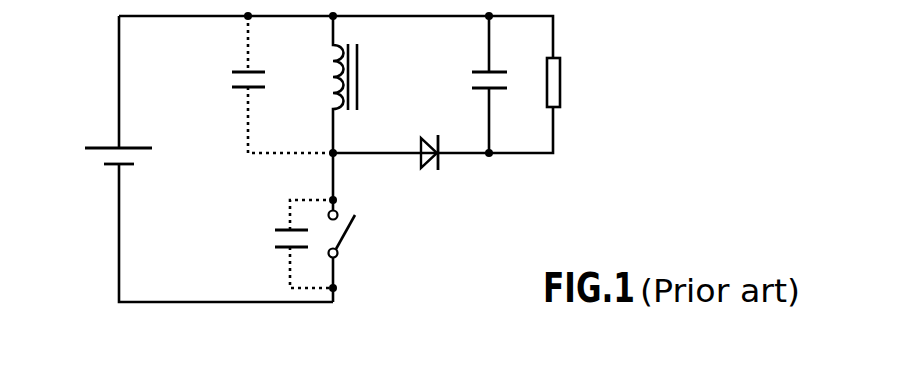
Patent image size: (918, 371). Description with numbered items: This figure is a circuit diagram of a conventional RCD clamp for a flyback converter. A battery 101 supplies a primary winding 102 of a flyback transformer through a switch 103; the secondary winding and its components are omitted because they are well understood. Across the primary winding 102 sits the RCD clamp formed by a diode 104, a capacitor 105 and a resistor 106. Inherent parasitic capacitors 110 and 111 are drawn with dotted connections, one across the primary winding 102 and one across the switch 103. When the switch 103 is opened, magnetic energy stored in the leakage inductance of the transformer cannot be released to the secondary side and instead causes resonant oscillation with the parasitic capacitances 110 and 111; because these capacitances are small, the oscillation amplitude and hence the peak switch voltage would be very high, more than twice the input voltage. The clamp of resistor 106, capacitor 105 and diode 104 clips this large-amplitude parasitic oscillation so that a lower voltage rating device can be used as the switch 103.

The battery 101 is at (98, 161).
The primary winding 102 is at (327, 81).
The switch 103 is at (348, 238).
The diode 104 is at (426, 166).
The capacitor 105 is at (471, 86).
The resistor 106 is at (561, 86).
The parasitic capacitor 110 is at (230, 82).
The parasitic capacitor 111 is at (275, 246).